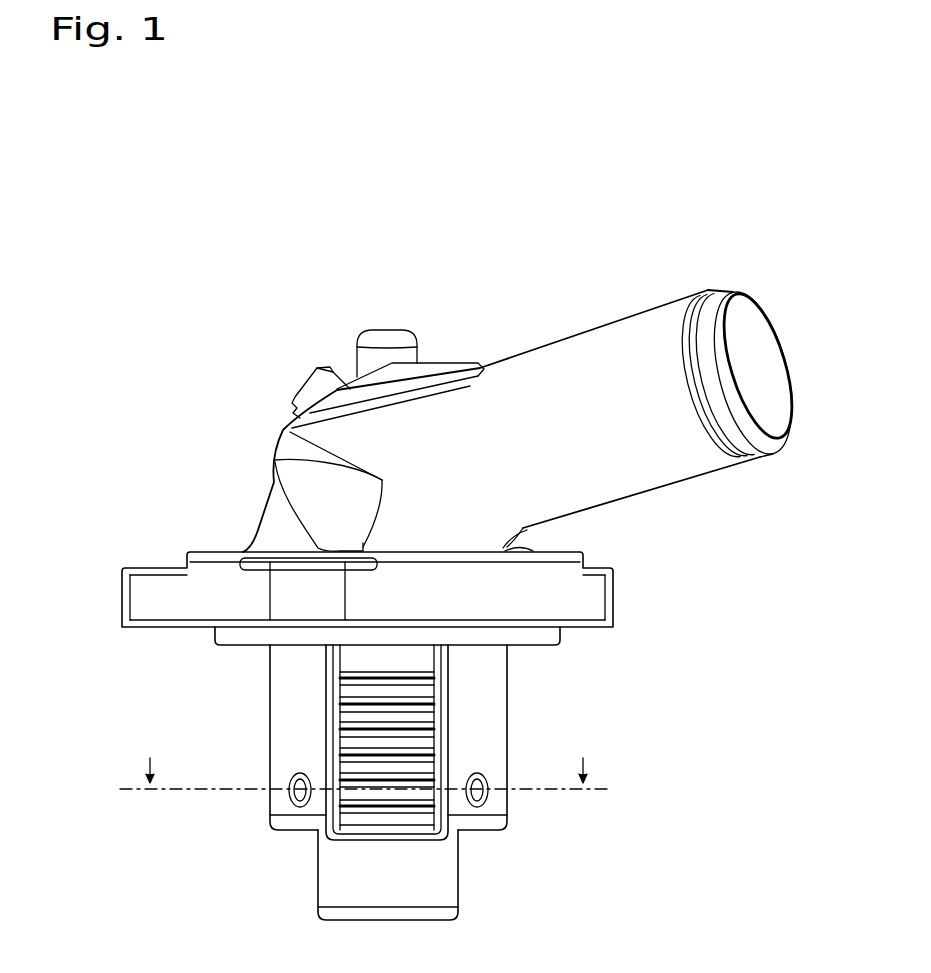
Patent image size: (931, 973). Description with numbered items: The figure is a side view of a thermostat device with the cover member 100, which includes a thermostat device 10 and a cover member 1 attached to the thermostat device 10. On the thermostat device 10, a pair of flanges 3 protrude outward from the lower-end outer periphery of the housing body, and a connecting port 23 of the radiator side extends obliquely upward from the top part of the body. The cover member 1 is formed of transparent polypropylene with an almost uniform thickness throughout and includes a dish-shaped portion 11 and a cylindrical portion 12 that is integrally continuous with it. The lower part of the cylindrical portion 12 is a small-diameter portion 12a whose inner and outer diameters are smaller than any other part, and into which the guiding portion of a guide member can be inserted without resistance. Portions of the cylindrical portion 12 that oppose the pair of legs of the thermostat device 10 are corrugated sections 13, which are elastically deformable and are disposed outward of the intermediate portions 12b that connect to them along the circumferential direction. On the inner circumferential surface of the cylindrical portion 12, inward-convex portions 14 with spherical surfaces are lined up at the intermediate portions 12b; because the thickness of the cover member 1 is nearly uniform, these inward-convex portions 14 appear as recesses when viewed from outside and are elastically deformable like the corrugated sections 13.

The thermostat device with cover member 100 is at (143, 182).
The cover member 1 is at (473, 855).
The flange 3 is at (175, 597).
The thermostat device 10 is at (258, 520).
The dish-shaped portion 11 is at (240, 645).
The cylindrical portion 12 is at (407, 783).
The small-diameter portion 12a is at (332, 895).
The intermediate portion 12b is at (493, 690).
The corrugated section 13 is at (355, 692).
The inward-convex portion 14 is at (296, 785).
The connecting port 23 is at (758, 375).